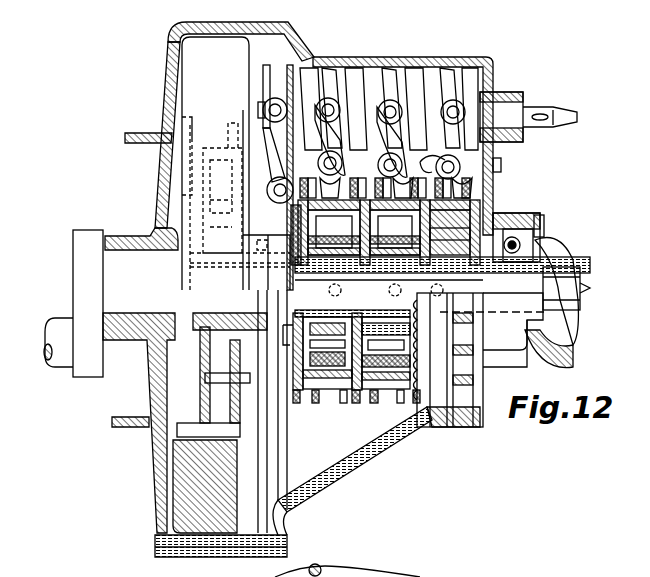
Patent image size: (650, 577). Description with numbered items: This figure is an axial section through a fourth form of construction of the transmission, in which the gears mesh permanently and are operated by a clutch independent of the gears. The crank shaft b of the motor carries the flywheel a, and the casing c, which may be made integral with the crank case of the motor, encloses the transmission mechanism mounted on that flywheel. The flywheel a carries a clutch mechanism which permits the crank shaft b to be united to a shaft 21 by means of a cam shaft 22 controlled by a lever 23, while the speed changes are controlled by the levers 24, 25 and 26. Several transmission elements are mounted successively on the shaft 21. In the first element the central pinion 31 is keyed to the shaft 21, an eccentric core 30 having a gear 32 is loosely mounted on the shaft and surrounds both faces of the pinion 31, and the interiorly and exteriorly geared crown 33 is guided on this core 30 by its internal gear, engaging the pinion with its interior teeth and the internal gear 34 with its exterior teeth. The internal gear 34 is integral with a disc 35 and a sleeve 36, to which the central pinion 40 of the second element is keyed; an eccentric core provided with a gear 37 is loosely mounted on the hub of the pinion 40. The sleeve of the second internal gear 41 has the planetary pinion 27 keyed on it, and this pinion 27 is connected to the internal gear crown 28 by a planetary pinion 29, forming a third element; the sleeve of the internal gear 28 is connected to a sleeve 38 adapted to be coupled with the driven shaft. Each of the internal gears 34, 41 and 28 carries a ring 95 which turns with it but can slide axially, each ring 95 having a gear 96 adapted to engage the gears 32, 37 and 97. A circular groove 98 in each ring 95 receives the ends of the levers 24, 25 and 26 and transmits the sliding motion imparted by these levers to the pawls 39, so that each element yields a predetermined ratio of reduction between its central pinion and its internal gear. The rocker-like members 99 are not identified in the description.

The flywheel a is at (236, 163).
The crank shaft b is at (83, 303).
The casing c is at (158, 184).
The shaft 21 is at (566, 271).
The cam shaft 22 is at (525, 110).
The lever 23 is at (280, 205).
The lever 24 is at (338, 140).
The lever 25 is at (398, 140).
The lever 26 is at (496, 142).
The planetary pinion 27 is at (452, 265).
The internal gear crown 28 is at (495, 210).
The planetary pinion 29 is at (525, 222).
The eccentric core 30 is at (300, 345).
The central pinion 31 is at (312, 265).
The gear 32 is at (296, 403).
The crown 33 is at (300, 370).
The internal gear 34 is at (329, 232).
The disc 35 is at (372, 265).
The sleeve 36 is at (408, 265).
The gear 37 is at (356, 403).
The sleeve 38 is at (573, 250).
The pawls 39 is at (300, 172).
The central pinion 40 is at (390, 290).
The internal gear 41 is at (395, 309).
The ring 95 is at (342, 403).
The gear 96 is at (318, 405).
The gear 97 is at (428, 418).
The circular groove 98 is at (318, 403).
The rocker arm 99 is at (345, 92).